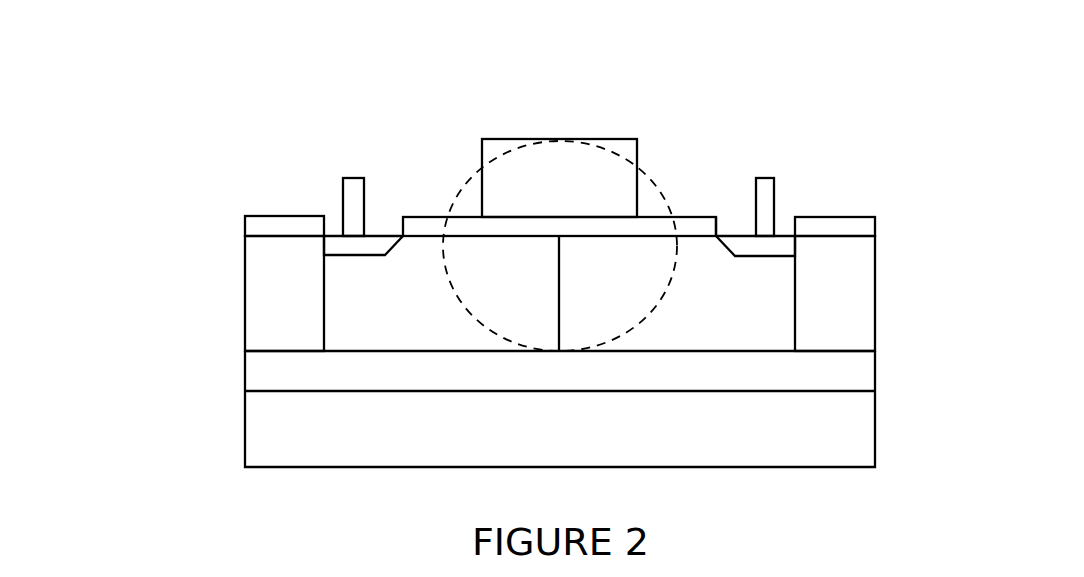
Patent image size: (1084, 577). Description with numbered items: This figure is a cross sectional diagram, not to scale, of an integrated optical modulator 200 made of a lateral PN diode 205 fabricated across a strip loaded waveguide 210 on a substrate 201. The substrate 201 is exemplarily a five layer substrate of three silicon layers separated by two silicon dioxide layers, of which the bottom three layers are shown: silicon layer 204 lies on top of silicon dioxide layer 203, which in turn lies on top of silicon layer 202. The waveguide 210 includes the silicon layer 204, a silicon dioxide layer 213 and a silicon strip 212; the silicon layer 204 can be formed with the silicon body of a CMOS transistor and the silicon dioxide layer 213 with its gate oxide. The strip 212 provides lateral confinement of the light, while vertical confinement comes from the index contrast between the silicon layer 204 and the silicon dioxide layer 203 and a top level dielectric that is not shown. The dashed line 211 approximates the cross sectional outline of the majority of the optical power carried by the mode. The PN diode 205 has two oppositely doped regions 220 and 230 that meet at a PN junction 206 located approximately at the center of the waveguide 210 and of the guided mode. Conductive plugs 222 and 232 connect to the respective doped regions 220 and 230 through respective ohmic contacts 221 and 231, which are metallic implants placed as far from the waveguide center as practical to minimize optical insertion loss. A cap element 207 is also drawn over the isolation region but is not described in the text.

The optical modulator 200 is at (375, 128).
The substrate 201 is at (175, 272).
The silicon layer 202 is at (319, 441).
The silicon dioxide layer 203 is at (314, 382).
The silicon layer 204 is at (307, 306).
The lateral PN diode 205 is at (682, 127).
The PN junction 206 is at (560, 315).
The isolation cap 207 is at (255, 227).
The strip loaded waveguide 210 is at (520, 118).
The dashed line 211 is at (458, 193).
The silicon strip 212 is at (544, 189).
The silicon dioxide layer 213 is at (697, 228).
The doped region 220 is at (387, 324).
The ohmic contact 221 is at (335, 247).
The conductive plug 222 is at (353, 185).
The doped region 230 is at (771, 324).
The ohmic contact 231 is at (780, 245).
The conductive plug 232 is at (766, 187).